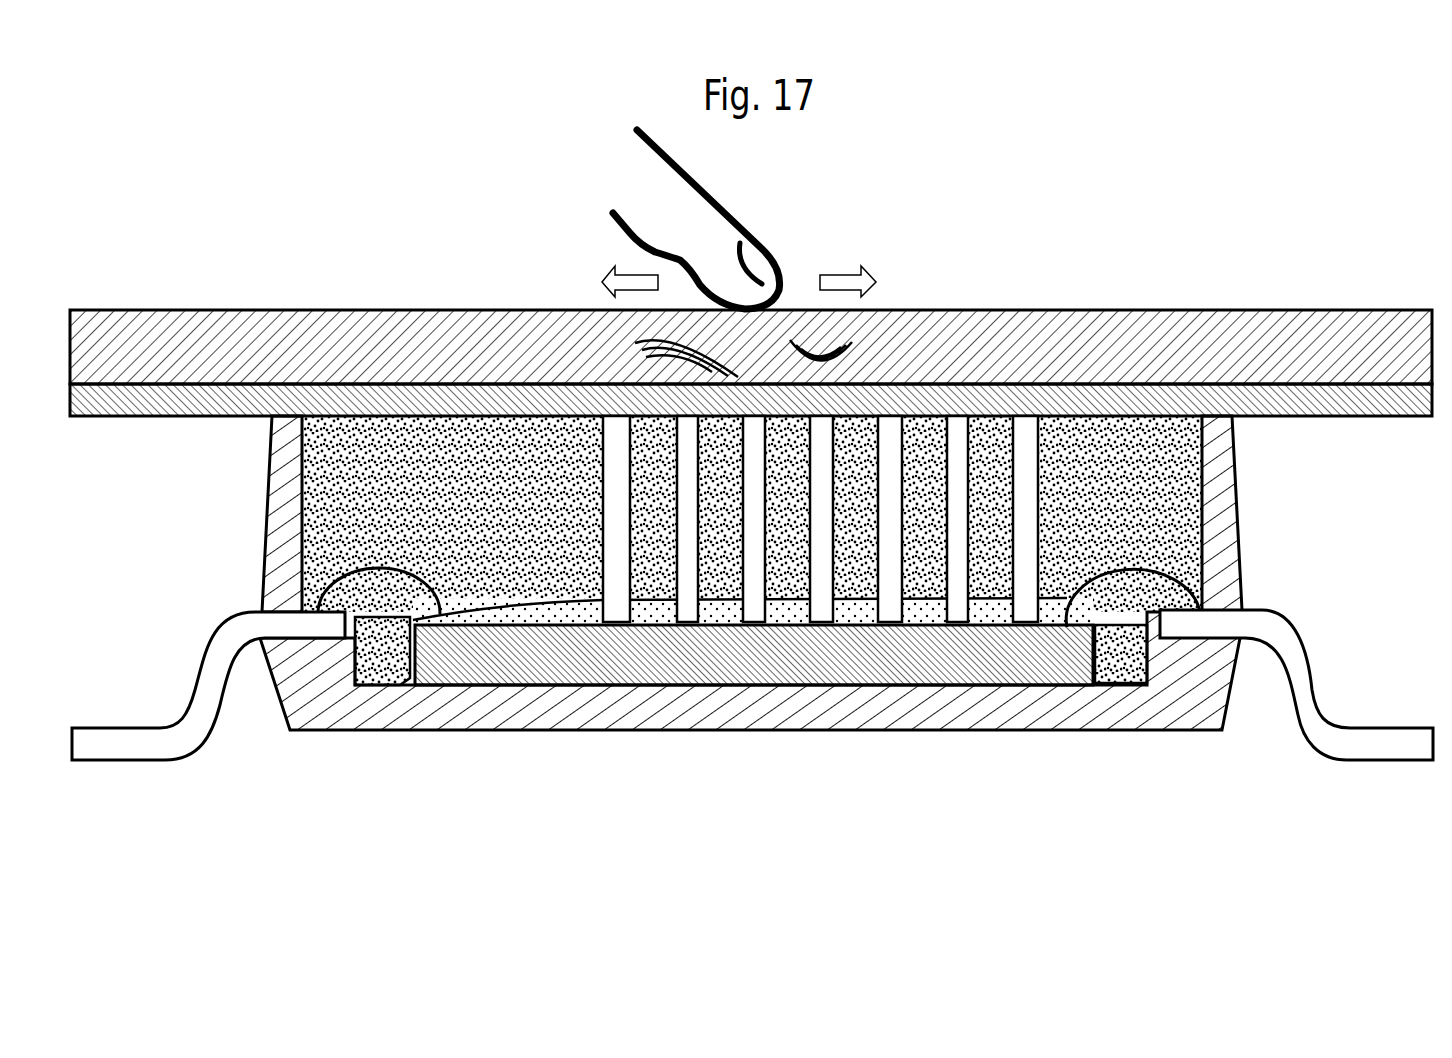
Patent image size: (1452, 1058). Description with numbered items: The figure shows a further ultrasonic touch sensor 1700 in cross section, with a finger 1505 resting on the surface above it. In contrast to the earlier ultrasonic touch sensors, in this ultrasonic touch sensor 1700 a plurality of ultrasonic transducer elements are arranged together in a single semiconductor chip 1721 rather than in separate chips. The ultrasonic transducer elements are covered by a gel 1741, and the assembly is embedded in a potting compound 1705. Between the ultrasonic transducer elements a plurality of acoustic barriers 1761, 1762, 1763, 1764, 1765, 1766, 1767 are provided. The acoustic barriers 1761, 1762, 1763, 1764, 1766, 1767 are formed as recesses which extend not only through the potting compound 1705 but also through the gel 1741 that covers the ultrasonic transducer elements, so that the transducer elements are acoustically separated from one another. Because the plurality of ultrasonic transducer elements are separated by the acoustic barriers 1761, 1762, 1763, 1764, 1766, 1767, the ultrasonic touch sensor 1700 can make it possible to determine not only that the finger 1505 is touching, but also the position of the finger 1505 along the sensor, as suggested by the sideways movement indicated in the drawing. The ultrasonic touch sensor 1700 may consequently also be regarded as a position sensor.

The finger 1505 is at (650, 205).
The ultrasonic touch sensor 1700 is at (186, 547).
The semiconductor chip 1721 is at (355, 683).
The gel 1741 is at (410, 682).
The acoustic barrier 1761 is at (472, 622).
The acoustic barrier 1762 is at (620, 597).
The acoustic barrier 1763 is at (750, 608).
The acoustic barrier 1764 is at (817, 600).
The acoustic barrier 1765 is at (890, 590).
The acoustic barrier 1766 is at (955, 610).
The acoustic barrier 1767 is at (1025, 607).
The potting compound 1705 is at (1113, 492).